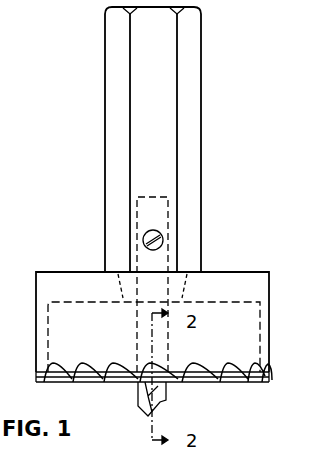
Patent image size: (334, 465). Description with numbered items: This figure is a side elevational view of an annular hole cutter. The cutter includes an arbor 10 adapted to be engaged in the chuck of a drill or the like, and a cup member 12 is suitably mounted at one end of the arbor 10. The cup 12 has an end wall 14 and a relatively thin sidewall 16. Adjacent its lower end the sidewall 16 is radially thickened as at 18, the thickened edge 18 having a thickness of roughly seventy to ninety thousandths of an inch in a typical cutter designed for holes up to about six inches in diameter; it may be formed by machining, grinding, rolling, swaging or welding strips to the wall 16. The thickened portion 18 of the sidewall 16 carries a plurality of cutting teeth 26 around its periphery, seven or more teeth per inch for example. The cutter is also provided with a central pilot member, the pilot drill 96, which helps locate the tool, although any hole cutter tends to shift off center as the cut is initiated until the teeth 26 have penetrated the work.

The arbor 10 is at (197, 93).
The cup member 12 is at (248, 270).
The end wall 14 is at (85, 286).
The sidewall 16 is at (270, 322).
The thickened portion 18 is at (273, 379).
The cutting teeth 26 is at (203, 385).
The pilot drill 96 is at (147, 406).